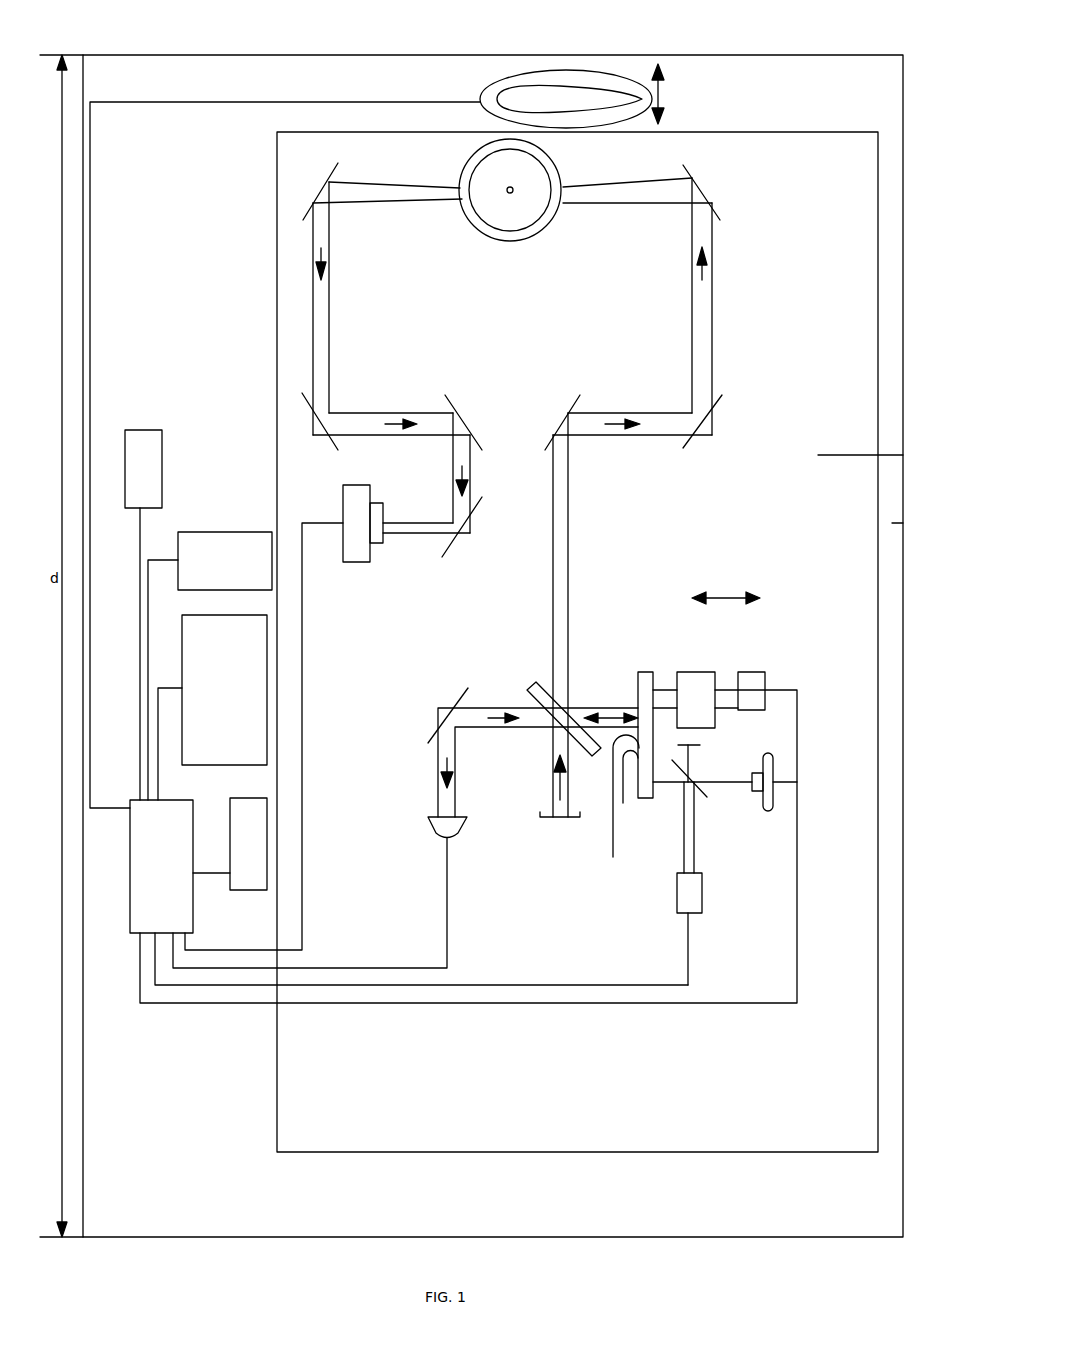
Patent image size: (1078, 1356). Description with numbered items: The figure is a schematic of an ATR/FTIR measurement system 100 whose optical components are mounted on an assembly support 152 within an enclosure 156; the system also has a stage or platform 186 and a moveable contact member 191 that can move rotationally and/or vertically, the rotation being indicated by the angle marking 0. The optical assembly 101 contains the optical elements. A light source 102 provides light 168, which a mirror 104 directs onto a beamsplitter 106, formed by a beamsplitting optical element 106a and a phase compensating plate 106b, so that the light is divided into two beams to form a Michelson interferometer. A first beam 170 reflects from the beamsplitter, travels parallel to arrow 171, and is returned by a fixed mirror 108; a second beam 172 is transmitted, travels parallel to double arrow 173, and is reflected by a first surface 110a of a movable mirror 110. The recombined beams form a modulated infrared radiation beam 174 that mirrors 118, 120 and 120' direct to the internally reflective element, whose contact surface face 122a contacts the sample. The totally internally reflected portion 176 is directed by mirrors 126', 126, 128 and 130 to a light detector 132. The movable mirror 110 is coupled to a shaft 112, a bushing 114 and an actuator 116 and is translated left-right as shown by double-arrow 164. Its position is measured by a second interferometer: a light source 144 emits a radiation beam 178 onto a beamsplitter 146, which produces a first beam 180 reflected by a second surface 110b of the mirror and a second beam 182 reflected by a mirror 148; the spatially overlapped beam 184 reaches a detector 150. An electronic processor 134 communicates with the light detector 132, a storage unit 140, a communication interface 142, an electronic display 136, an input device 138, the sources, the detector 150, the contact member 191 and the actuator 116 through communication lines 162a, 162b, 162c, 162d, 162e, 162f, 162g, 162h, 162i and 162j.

The measurement system 100 is at (742, 44).
The optical assembly 101 is at (782, 352).
The angle of rotation 0 is at (668, 94).
The contact member 191 is at (566, 99).
The contact surface face 122a is at (508, 193).
The stage or platform 186 is at (523, 213).
The mirror 126' is at (338, 292).
The mirror 120' is at (671, 290).
The total internal reflected portion 176 is at (420, 182).
The modulated infrared radiation beam 174 is at (588, 180).
The mirror 126 is at (352, 417).
The mirror 128 is at (478, 425).
The mirror 130 is at (465, 535).
The light detector 132 is at (355, 562).
The mirror 120 is at (654, 421).
The mirror 118 is at (558, 426).
The second beam 172 is at (575, 640).
The double-arrow 164 is at (722, 592).
The mirror 104 is at (430, 738).
The light source 102 is at (440, 832).
The light 168 is at (532, 736).
The arrow 171 is at (550, 786).
The first beam 170 is at (548, 800).
The fixed mirror 108 is at (545, 822).
The beamsplitter 106 is at (592, 756).
The beamsplitting optical element 106a is at (533, 688).
The phase compensating plate 106b is at (527, 697).
The double arrow 173 is at (610, 702).
The movable mirror 110 is at (627, 690).
The first surface 110a is at (634, 796).
The second surface 110b is at (616, 871).
The first beam 180 is at (678, 795).
The shaft 112 is at (662, 690).
The bushing 114 is at (692, 672).
The actuator 116 is at (752, 672).
The mirror 148 is at (715, 728).
The communication line 162i is at (797, 729).
The communication line 162h is at (798, 782).
The beamsplitter 146 is at (699, 836).
The second beam 182 is at (700, 770).
The spatially overlapped beam 184 is at (752, 791).
The detector 150 is at (773, 806).
The radiation beam 178 is at (702, 873).
The light source 144 is at (677, 890).
The communication line 162g is at (484, 985).
The communication line 162f is at (345, 968).
The communication line 162a is at (305, 700).
The communication line 162b is at (219, 505).
The communication line 162c is at (140, 615).
The communication line 162d is at (158, 745).
The communication line 162e is at (205, 878).
The communication line 162j is at (192, 100).
The communication interface 142 is at (162, 448).
The storage unit 140 is at (225, 561).
The electronic display 136 is at (224, 690).
The electronic processor 134 is at (161, 866).
The input device 138 is at (267, 835).
The assembly support 152 is at (880, 455).
The enclosure 156 is at (892, 523).